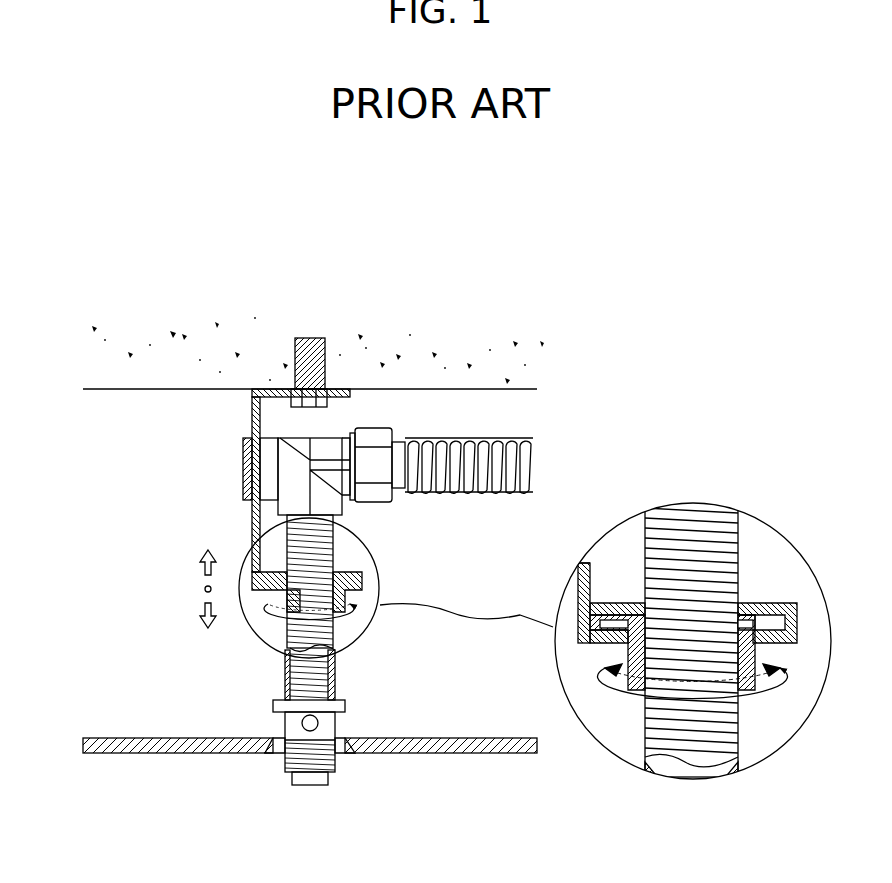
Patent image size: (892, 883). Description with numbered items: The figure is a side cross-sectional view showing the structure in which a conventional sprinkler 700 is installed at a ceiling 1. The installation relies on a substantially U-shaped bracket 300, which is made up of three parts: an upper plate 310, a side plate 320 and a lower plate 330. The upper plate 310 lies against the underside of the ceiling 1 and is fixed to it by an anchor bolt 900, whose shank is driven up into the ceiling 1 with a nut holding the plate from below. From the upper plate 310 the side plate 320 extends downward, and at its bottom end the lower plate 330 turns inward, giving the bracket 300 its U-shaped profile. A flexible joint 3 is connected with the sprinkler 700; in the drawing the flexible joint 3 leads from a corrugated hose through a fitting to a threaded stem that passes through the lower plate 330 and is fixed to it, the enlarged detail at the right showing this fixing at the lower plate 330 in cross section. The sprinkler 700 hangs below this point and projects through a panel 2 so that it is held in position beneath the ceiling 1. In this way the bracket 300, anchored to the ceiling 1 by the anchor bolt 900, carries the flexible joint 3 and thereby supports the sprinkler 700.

The ceiling 1 is at (110, 386).
The ceiling panel 2 is at (170, 748).
The flexible joint 3 is at (437, 505).
The bracket 300 is at (257, 500).
The upper plate 310 is at (352, 397).
The side plate 320 is at (251, 423).
The lower plate 330 is at (626, 642).
The sprinkler 700 is at (348, 797).
The anchor bolt 900 is at (323, 341).